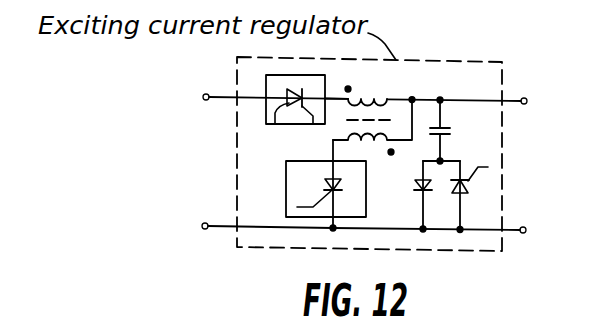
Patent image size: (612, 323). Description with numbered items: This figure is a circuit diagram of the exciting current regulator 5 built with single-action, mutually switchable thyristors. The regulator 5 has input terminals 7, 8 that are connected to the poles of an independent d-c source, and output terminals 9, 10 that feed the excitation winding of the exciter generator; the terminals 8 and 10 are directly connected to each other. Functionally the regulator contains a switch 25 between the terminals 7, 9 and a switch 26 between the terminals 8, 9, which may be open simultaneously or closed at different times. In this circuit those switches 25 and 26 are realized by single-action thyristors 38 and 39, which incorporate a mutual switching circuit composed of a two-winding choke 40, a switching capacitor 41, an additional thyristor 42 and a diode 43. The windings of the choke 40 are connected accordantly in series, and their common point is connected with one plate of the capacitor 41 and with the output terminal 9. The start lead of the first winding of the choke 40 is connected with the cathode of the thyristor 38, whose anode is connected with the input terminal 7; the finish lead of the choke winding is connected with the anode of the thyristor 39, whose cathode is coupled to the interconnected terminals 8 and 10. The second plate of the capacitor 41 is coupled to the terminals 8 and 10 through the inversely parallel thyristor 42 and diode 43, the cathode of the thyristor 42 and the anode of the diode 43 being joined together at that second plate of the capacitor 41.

The exciting current regulator 5 is at (503, 163).
The input terminal 7 is at (203, 97).
The input terminal 8 is at (202, 226).
The output terminal 9 is at (527, 101).
The output terminal 10 is at (527, 231).
The switch 25 is at (328, 82).
The switch 26 is at (366, 205).
The single-action thyristor 38 is at (275, 125).
The single-action thyristor 39 is at (327, 183).
The two-winding choke 40 is at (340, 122).
The switching capacitor 41 is at (445, 123).
The additional thyristor 42 is at (466, 190).
The diode 43 is at (416, 184).